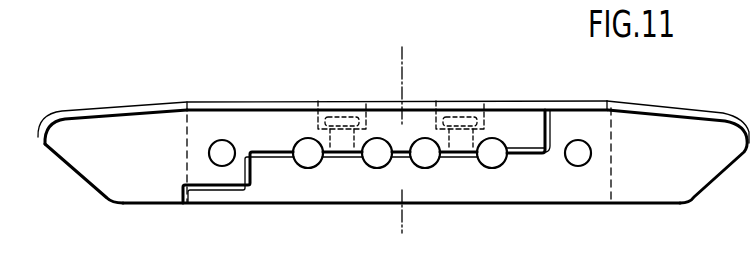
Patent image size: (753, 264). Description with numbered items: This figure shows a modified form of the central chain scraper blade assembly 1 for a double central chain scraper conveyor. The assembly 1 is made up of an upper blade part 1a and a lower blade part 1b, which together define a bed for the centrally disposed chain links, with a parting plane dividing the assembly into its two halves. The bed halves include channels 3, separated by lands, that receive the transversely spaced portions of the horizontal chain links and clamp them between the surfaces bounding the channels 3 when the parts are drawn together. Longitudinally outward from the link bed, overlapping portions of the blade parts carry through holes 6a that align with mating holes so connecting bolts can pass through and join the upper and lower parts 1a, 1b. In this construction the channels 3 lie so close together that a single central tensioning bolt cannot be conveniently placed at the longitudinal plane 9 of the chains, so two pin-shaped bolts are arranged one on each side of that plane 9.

The central chain scraper blade assembly 1 is at (578, 97).
The upper blade part 1a is at (137, 119).
The lower blade part 1b is at (542, 187).
The channels 3 is at (307, 143).
The through holes 6a is at (222, 147).
The longitudinal plane of the chains 9 is at (403, 73).